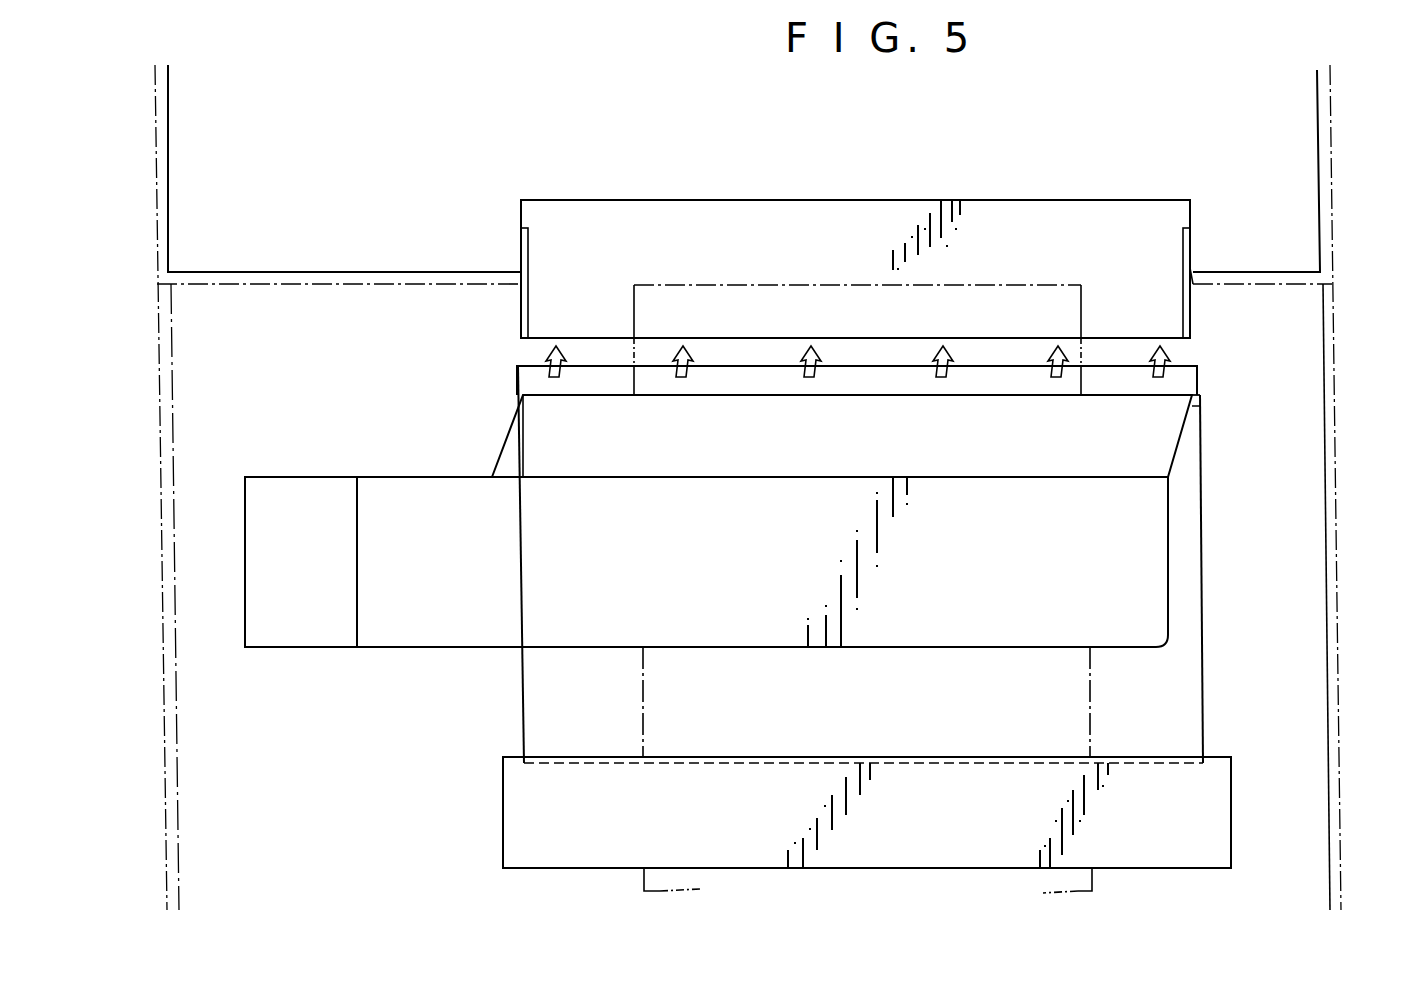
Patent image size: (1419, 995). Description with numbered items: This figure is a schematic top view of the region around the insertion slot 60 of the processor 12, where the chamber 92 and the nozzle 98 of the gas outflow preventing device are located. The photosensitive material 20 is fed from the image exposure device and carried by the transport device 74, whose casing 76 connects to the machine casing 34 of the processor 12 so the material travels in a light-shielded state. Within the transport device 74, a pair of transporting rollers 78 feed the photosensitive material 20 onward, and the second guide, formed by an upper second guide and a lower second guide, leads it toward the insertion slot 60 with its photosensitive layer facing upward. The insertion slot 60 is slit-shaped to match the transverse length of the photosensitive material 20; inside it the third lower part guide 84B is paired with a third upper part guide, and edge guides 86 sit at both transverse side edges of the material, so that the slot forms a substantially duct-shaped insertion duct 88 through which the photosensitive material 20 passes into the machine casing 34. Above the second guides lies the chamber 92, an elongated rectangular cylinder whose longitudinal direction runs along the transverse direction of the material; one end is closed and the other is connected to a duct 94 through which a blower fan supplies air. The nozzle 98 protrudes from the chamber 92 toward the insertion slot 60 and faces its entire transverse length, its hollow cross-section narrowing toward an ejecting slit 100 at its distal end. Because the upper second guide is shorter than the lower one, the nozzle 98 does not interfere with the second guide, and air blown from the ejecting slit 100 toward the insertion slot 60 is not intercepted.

The processor 12 is at (450, 87).
The photosensitive material 20 is at (1083, 300).
The machine casing 34 is at (1336, 162).
The insertion slot 60 is at (1195, 268).
The transport device 74 is at (1292, 545).
The casing 76 is at (1342, 582).
The pair of transporting rollers 78 is at (1222, 853).
The third lower part guide 84B is at (1167, 212).
The edge guides 86 is at (521, 236).
The insertion duct 88 is at (1204, 226).
The chamber 92 is at (550, 636).
The duct 94 is at (311, 477).
The nozzle 98 is at (497, 462).
The ejecting slit 100 is at (1134, 390).